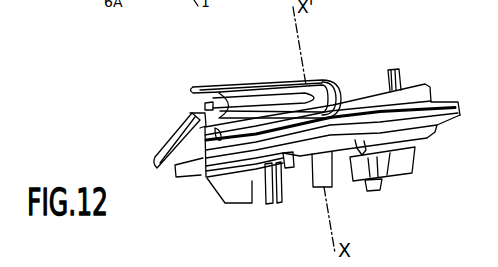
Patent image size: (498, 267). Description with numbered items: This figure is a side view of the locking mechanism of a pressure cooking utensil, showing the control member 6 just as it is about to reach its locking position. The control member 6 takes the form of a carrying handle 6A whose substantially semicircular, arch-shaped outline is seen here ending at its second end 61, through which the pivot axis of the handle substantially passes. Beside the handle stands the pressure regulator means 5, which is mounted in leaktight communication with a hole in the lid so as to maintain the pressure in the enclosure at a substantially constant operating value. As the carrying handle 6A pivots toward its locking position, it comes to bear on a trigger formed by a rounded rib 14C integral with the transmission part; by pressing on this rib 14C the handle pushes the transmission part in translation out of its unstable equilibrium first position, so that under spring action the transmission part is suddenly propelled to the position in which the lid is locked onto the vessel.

The pressure regulator means 5 is at (412, 163).
The control member 6 is at (198, 83).
The carrying handle 6A is at (260, 86).
The second end 61 is at (333, 88).
The rounded rib 14C is at (209, 119).